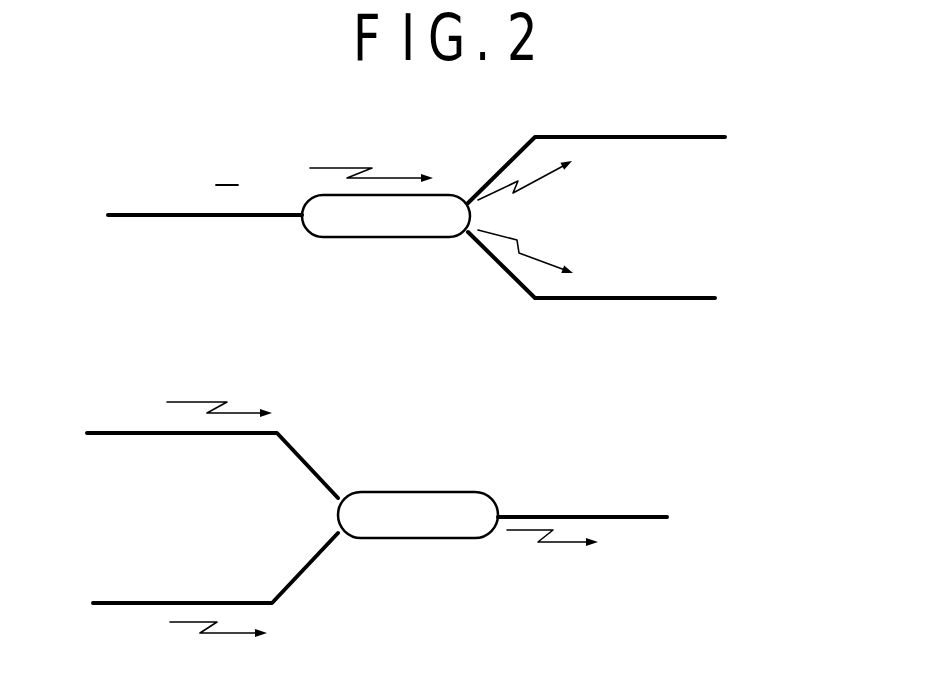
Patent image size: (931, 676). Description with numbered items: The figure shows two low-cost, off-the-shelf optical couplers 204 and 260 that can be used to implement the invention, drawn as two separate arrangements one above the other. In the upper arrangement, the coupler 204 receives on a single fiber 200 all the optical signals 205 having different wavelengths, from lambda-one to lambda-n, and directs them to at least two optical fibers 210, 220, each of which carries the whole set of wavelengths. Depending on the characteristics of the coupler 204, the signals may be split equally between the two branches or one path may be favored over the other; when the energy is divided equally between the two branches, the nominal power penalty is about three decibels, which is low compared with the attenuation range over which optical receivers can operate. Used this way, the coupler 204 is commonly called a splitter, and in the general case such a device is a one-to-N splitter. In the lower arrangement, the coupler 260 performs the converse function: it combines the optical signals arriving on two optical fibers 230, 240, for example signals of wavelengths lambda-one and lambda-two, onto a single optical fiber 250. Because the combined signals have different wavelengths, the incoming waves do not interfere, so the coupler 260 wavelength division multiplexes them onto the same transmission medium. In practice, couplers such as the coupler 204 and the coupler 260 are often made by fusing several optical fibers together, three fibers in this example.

The single fiber 200 is at (215, 222).
The coupler 204 is at (360, 232).
The optical signals 205 is at (345, 167).
The optical fiber 210 is at (655, 132).
The optical fiber 220 is at (637, 300).
The optical fiber 230 is at (313, 468).
The optical fiber 240 is at (315, 563).
The single optical fiber 250 is at (640, 510).
The coupler 260 is at (450, 508).